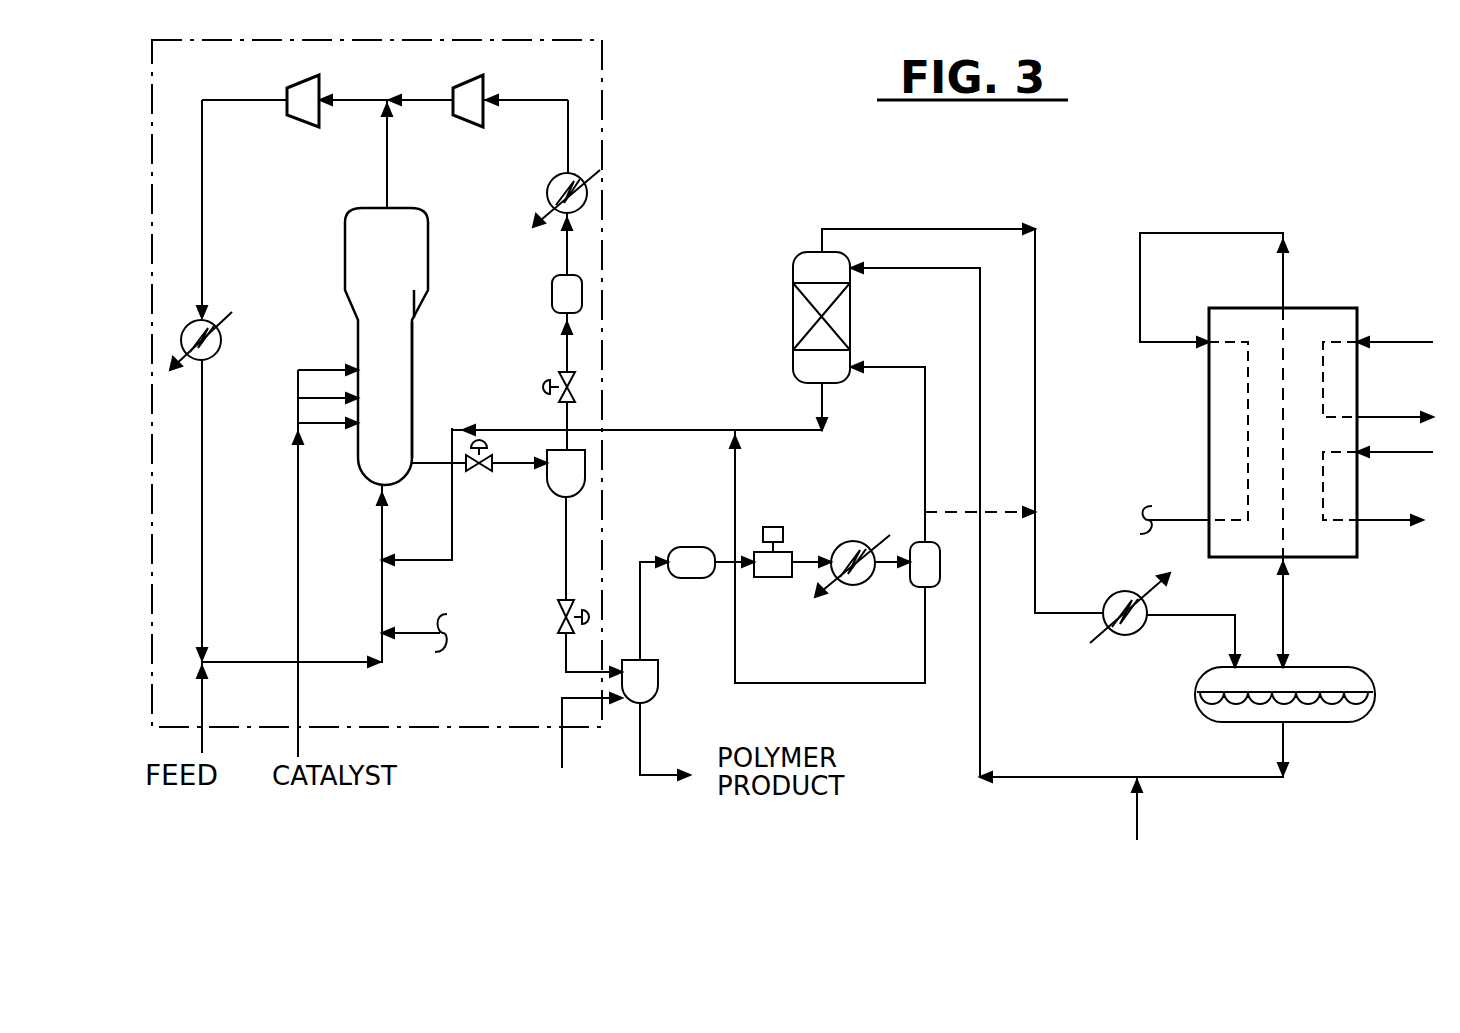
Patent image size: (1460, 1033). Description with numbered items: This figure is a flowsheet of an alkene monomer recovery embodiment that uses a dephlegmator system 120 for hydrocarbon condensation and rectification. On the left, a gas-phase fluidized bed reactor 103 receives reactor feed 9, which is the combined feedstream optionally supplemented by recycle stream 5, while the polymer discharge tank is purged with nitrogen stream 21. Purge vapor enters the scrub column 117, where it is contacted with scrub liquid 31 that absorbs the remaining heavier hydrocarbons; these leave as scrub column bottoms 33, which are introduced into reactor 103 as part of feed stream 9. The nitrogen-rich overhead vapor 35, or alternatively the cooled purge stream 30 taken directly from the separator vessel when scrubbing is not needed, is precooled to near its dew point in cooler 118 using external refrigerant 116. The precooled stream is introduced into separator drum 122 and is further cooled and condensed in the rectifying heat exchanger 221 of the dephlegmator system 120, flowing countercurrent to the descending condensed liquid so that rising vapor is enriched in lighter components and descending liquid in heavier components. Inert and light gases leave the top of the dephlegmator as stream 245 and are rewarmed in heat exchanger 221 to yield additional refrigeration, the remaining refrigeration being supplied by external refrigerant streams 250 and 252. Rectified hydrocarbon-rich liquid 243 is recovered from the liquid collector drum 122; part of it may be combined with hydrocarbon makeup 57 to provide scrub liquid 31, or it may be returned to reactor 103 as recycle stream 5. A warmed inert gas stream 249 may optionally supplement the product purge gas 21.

The fluidized bed reactor 103 is at (343, 270).
The reactor feed 9 is at (382, 531).
The recycle stream 5 is at (416, 633).
The nitrogen stream 21 is at (562, 750).
The scrub column 117 is at (793, 320).
The nitrogen-rich overhead vapor 35 is at (905, 229).
The scrub liquid 31 is at (980, 295).
The scrub column bottoms 33 is at (752, 428).
The product purge gas stream 30 is at (990, 512).
The external refrigerant 116 is at (1107, 632).
The cooler 118 is at (1115, 640).
The dephlegmator system 120 is at (1312, 212).
The inert and light gas stream 245 is at (1157, 233).
The rectifying heat exchanger 221 is at (1340, 308).
The external refrigerant stream 250 is at (1400, 345).
The warmed inert gas stream 249 is at (1160, 520).
The external refrigerant stream 252 is at (1400, 455).
The separator drum 122 is at (1345, 667).
The hydrocarbon-rich liquid 243 is at (1290, 735).
The hydrocarbon makeup 57 is at (1137, 808).